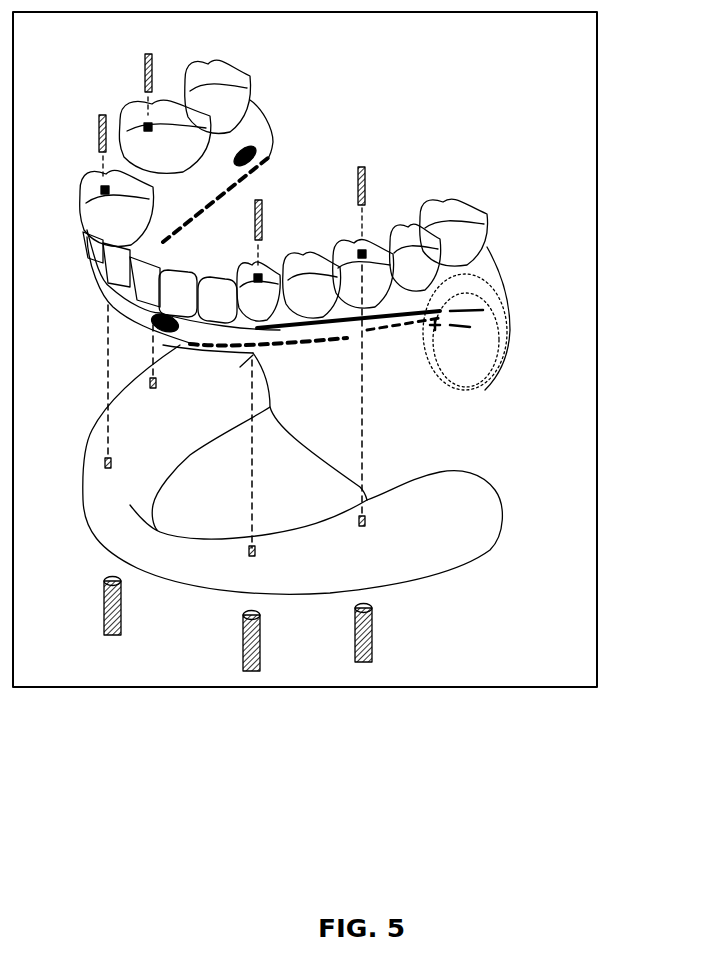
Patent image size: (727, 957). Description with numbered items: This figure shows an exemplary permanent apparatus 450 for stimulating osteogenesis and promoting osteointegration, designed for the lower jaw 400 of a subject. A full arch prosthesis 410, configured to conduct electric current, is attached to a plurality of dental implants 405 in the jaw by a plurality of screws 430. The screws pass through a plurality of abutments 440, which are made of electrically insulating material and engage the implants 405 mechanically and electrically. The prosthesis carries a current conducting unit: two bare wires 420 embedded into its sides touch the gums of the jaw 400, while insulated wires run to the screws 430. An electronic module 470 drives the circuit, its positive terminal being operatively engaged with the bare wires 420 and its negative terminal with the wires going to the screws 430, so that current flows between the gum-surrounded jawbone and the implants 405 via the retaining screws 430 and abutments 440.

The lower jaw 400 is at (470, 510).
The dental implants 405 is at (160, 627).
The full arch prosthesis 410 is at (490, 241).
The bare wires 420 is at (166, 236).
The screws 430 is at (146, 87).
The abutments 440 is at (140, 483).
The dental model assembly 450 is at (596, 248).
The electronic module 470 is at (500, 367).